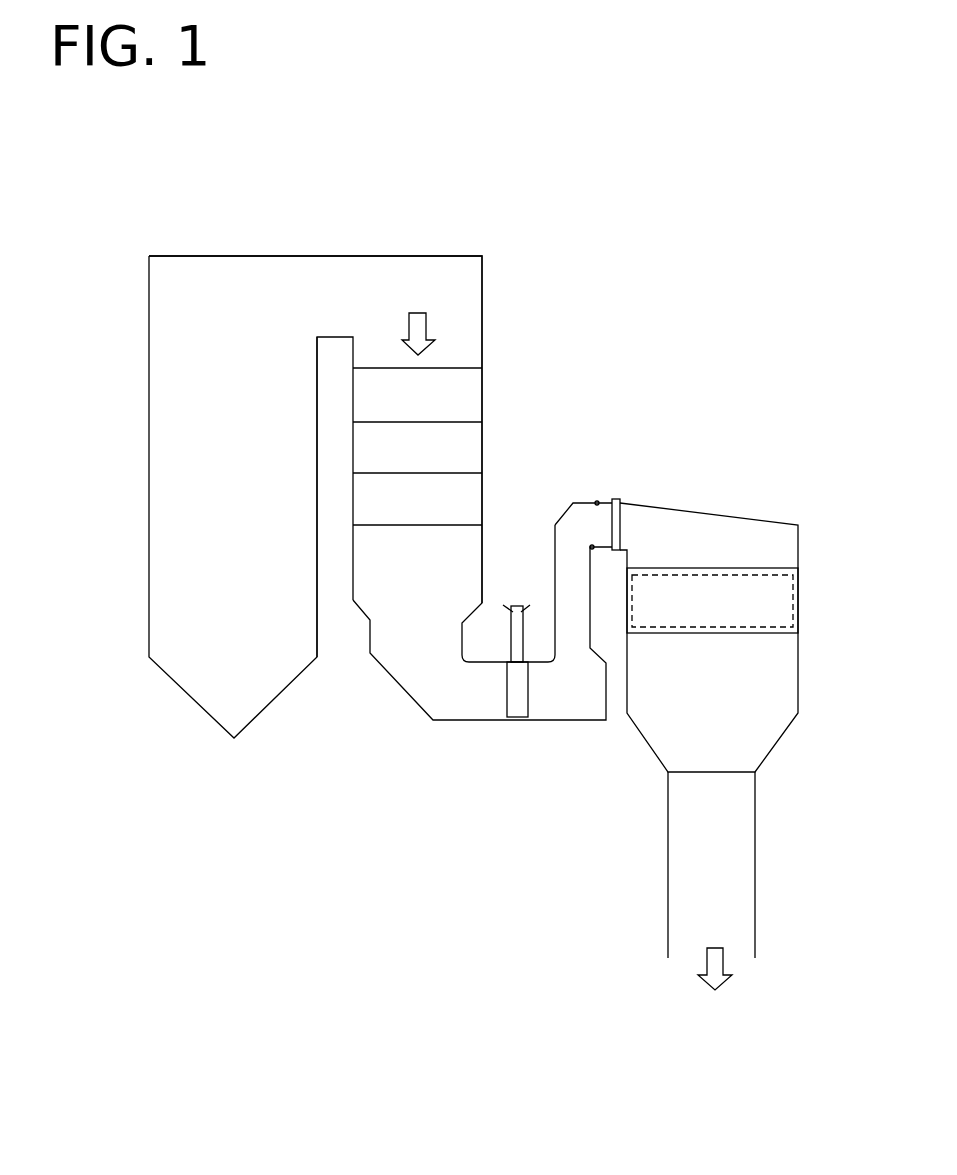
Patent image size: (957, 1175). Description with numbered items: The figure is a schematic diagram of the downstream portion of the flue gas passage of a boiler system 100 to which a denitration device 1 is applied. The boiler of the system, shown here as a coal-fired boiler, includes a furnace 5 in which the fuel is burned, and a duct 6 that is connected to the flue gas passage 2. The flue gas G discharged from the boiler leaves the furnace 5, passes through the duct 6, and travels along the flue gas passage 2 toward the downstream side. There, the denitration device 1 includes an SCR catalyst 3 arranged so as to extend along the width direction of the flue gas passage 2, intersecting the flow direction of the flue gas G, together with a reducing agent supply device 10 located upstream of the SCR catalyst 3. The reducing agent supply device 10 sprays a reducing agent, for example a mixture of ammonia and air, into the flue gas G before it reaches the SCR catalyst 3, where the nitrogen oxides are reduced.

The boiler system 100 is at (501, 195).
The duct 6 is at (332, 270).
The furnace 5 is at (157, 555).
The flue gas passage 2 is at (372, 605).
The reducing agent supply device 10 is at (518, 707).
The denitration device 1 is at (785, 568).
The SCR catalyst 3 is at (794, 603).